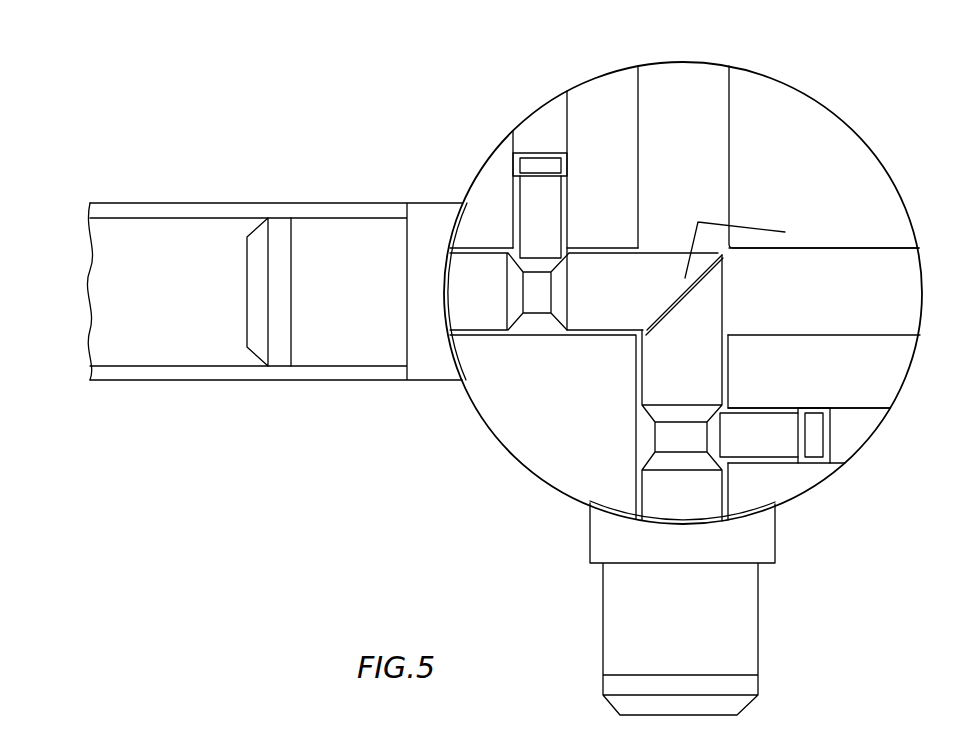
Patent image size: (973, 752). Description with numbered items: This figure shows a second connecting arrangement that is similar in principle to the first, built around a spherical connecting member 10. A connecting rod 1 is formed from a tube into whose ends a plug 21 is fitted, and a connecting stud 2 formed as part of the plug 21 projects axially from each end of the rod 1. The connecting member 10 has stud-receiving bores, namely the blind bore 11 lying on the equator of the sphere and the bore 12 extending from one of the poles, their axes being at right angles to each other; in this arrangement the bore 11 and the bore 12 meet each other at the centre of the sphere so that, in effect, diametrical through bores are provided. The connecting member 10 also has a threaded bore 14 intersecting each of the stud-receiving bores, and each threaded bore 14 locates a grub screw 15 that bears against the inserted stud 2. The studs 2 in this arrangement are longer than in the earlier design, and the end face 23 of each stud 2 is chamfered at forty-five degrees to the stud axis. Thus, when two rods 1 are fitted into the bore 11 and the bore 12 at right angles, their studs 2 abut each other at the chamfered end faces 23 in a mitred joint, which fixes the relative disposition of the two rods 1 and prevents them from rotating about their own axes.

The connecting rod 1 is at (330, 382).
The connecting stud 2 is at (597, 319).
The connecting member 10 is at (892, 227).
The blind bore 11 is at (898, 297).
The bore 12 is at (692, 127).
The threaded bore 14 is at (567, 117).
The grub screw 15 is at (530, 218).
The plug 21 is at (758, 628).
The end face 23 is at (692, 294).